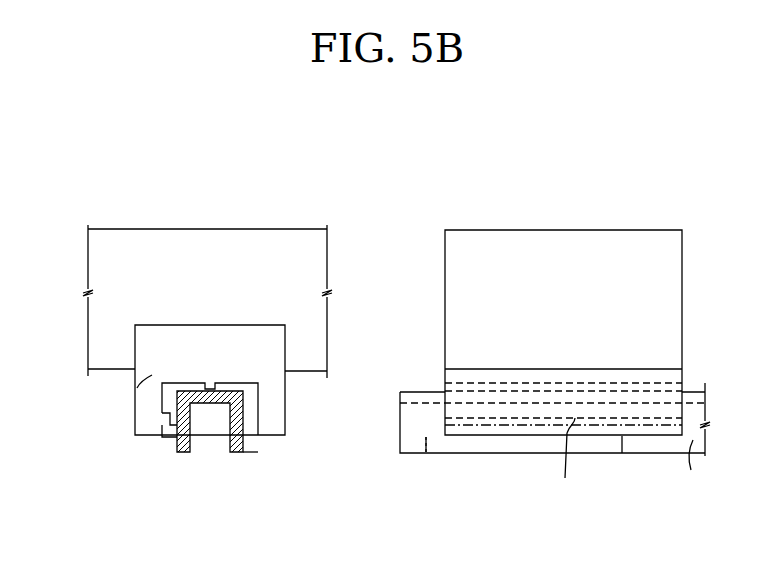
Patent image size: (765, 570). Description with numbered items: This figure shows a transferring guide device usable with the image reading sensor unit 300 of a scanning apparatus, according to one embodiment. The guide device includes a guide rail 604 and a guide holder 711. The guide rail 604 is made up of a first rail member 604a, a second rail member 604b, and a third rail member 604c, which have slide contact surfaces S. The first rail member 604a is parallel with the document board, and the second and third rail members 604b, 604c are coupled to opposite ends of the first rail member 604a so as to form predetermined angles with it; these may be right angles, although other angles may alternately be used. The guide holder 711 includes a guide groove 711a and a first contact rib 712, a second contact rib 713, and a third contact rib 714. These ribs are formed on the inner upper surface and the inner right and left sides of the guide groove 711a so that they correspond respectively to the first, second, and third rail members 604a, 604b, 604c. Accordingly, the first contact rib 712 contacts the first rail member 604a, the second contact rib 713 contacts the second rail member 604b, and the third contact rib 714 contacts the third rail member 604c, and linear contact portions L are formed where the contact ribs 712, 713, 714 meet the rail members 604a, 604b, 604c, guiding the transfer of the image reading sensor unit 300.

The image reading sensor unit 300 is at (445, 232).
The guide rail 604 is at (233, 456).
The first rail member 604a is at (206, 386).
The second rail member 604b is at (247, 446).
The third rail member 604c is at (170, 407).
The guide holder 711 is at (440, 366).
The guide groove 711a is at (146, 377).
The first contact rib 712 is at (232, 386).
The second contact rib 713 is at (445, 422).
The third contact rib 714 is at (163, 437).
The linear contact portions L is at (567, 462).
The slide contact surfaces S is at (690, 474).